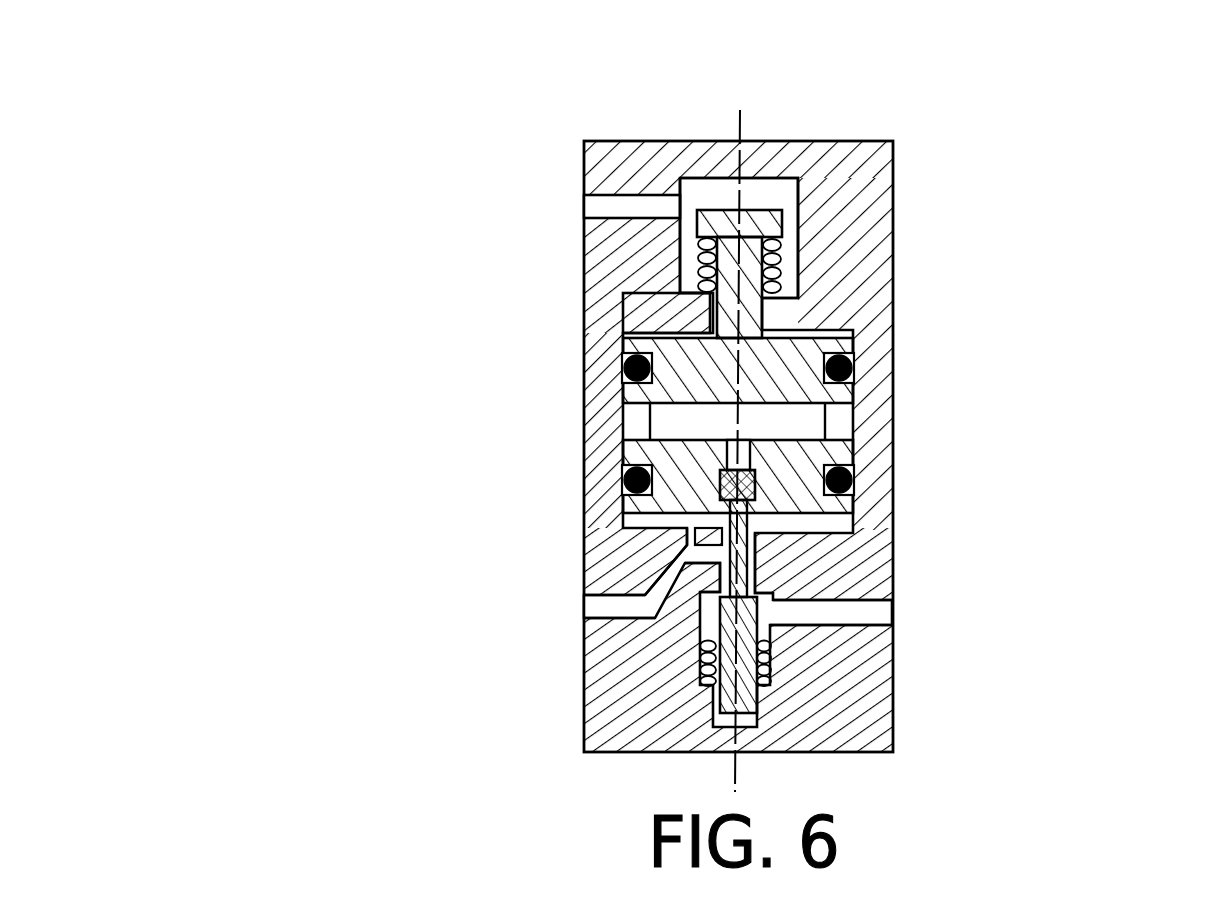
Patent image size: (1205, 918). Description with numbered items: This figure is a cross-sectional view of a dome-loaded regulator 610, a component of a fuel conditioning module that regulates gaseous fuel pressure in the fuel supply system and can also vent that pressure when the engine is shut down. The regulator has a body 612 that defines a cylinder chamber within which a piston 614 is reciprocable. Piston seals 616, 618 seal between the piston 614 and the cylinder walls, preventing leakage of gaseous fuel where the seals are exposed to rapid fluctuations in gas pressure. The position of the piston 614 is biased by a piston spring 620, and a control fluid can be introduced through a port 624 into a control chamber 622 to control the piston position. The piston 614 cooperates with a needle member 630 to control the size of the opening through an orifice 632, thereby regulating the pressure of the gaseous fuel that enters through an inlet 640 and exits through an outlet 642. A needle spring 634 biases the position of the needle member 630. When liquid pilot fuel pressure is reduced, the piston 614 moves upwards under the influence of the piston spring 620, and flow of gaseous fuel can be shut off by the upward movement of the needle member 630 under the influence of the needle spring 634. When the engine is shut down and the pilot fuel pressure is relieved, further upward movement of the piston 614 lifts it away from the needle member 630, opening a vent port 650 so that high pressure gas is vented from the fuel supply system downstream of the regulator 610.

The dome-loaded regulator 610 is at (400, 64).
The body 612 is at (593, 157).
The piston 614 is at (690, 365).
The piston seal 616 is at (633, 360).
The piston seal 618 is at (632, 478).
The piston spring 620 is at (775, 278).
The control chamber 622 is at (787, 195).
The port 624 is at (595, 205).
The needle member 630 is at (790, 527).
The orifice 632 is at (727, 585).
The needle spring 634 is at (770, 657).
The inlet 640 is at (870, 612).
The outlet 642 is at (610, 603).
The vent port 650 is at (750, 443).